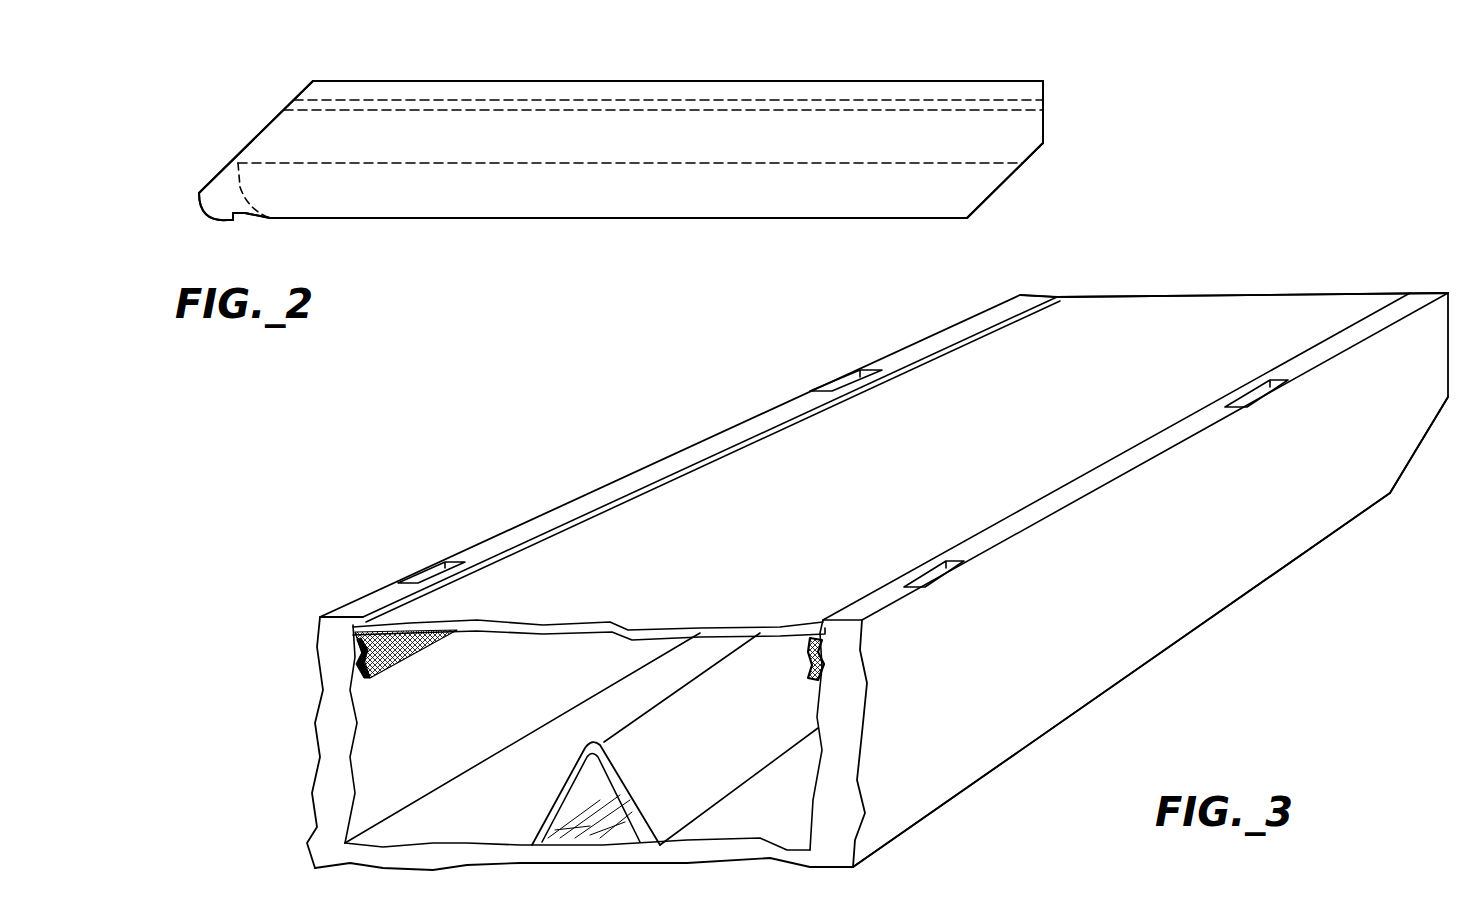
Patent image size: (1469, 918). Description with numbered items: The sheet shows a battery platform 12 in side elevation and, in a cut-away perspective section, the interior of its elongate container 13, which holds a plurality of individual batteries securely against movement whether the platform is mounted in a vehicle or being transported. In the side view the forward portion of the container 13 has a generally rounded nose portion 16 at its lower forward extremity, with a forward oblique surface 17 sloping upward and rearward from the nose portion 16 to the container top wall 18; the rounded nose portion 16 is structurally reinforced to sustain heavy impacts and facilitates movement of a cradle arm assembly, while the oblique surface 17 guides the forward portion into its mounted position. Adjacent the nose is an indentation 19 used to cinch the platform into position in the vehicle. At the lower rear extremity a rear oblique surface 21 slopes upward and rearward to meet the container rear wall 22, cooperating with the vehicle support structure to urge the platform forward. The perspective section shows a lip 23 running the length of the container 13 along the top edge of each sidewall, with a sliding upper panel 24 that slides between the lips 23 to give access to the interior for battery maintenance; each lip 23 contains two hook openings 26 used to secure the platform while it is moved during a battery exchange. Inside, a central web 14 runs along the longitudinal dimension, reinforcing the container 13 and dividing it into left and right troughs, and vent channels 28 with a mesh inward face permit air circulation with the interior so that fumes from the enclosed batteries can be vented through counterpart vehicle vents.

In FIG. 2, the battery platform 12 is at (513, 64).
In FIG. 3, the battery platform 12 is at (644, 463).
In FIG. 3, the container 13 is at (1180, 630).
In FIG. 3, the central web 14 is at (660, 800).
In FIG. 2, the nose portion 16 is at (203, 207).
In FIG. 2, the forward oblique surface 17 is at (227, 165).
In FIG. 2, the container top wall 18 is at (358, 81).
In FIG. 2, the indentation 19 is at (248, 218).
In FIG. 2, the rear oblique surface 21 is at (995, 190).
In FIG. 3, the rear oblique surface 21 is at (1413, 457).
In FIG. 2, the container rear wall 22 is at (1043, 125).
In FIG. 3, the lip 23 is at (987, 318).
In FIG. 3, the sliding upper panel 24 is at (1170, 310).
In FIG. 3, the hook openings 26 is at (842, 386).
In FIG. 3, the vent channels 28 is at (390, 665).